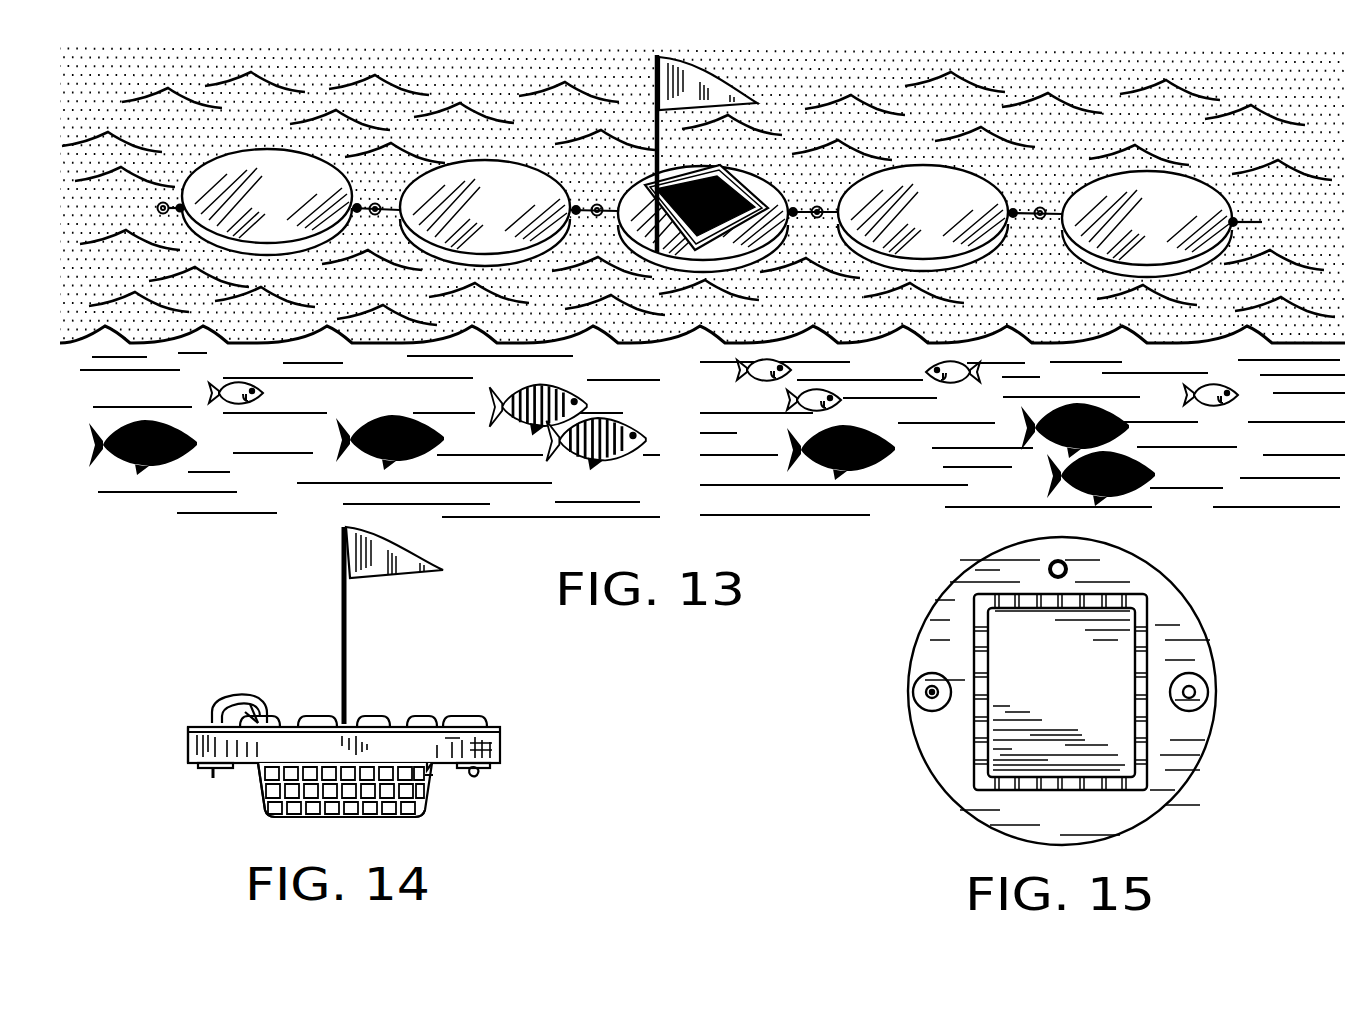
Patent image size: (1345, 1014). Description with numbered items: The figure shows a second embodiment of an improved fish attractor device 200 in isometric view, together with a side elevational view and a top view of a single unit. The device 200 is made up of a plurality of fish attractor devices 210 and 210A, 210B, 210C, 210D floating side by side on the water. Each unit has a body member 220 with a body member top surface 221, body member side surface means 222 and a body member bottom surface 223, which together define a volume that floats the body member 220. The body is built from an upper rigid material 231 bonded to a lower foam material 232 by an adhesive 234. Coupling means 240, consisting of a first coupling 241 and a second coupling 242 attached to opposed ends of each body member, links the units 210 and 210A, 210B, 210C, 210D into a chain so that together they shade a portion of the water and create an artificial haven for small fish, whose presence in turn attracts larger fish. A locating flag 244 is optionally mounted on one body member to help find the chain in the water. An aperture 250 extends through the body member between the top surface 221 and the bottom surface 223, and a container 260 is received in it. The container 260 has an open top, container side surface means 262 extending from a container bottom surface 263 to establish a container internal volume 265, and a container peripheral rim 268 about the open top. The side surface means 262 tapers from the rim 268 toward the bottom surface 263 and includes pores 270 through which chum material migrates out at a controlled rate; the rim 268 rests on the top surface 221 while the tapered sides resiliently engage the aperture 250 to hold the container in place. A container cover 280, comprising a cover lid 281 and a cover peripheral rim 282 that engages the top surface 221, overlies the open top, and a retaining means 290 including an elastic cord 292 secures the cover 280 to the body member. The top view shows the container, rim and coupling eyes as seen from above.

In FIG. 13, the improved fish attractor device 200 is at (703, 183).
In FIG. 13, the fish attractor device 210 is at (741, 163).
In FIG. 13, the fish attractor device 210A is at (302, 110).
In FIG. 13, the fish attractor device 210B is at (512, 175).
In FIG. 13, the fish attractor device 210C is at (958, 191).
In FIG. 13, the fish attractor device 210D is at (1178, 197).
In FIG. 14, the body member 220 is at (352, 696).
In FIG. 15, the body member 220 is at (1101, 691).
In FIG. 14, the body member top surface 221 is at (515, 728).
In FIG. 15, the body member top surface 221 is at (1173, 722).
In FIG. 14, the body member side surface means 222 is at (498, 760).
In FIG. 14, the body member bottom surface 223 is at (443, 766).
In FIG. 14, the upper rigid material 231 is at (192, 724).
In FIG. 15, the upper rigid material 231 is at (1173, 767).
In FIG. 14, the lower foam material 232 is at (188, 756).
In FIG. 14, the adhesive 234 is at (187, 731).
In FIG. 13, the coupling means 240 is at (388, 110).
In FIG. 13, the first coupling 241 is at (158, 208).
In FIG. 13, the second coupling 242 is at (385, 204).
In FIG. 13, the locating flag 244 is at (727, 96).
In FIG. 14, the locating flag 244 is at (400, 545).
In FIG. 14, the aperture 250 is at (510, 737).
In FIG. 14, the container 260 is at (282, 807).
In FIG. 14, the container side surface means 262 is at (258, 783).
In FIG. 14, the container bottom surface 263 is at (437, 812).
In FIG. 14, the container internal volume 265 is at (292, 808).
In FIG. 14, the container peripheral rim 268 is at (512, 722).
In FIG. 14, the pores 270 is at (447, 770).
In FIG. 14, the container cover 280 is at (312, 722).
In FIG. 14, the cover lid 281 is at (407, 713).
In FIG. 14, the cover peripheral rim 282 is at (272, 712).
In FIG. 14, the retaining means 290 is at (365, 668).
In FIG. 14, the elastic cord 292 is at (372, 712).